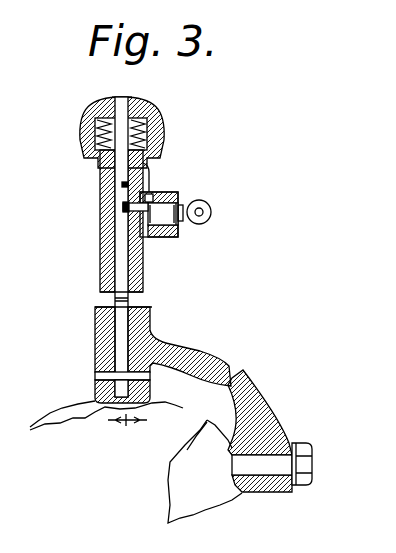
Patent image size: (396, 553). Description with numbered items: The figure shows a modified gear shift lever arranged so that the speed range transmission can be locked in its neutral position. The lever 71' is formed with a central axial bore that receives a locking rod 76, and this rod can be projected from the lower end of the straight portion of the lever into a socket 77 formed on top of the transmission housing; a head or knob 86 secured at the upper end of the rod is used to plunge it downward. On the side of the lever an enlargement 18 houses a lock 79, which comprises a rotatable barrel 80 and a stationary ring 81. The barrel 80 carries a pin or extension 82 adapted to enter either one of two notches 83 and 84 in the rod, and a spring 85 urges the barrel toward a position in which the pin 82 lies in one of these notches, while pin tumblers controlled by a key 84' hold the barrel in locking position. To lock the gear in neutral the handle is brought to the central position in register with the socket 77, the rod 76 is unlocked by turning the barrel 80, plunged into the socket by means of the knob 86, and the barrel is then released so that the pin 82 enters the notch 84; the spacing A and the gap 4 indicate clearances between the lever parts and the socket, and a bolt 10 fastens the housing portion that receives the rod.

The cap knob 85 is at (140, 100).
The cap 86 is at (163, 121).
The detent 84 is at (154, 173).
The boss 18 is at (158, 192).
The tubular casing 71' is at (100, 221).
The pin 83 is at (124, 205).
The pin head 82 is at (127, 210).
The plug flange 81 is at (180, 202).
The ball 79 is at (222, 204).
The ball eye 84' is at (218, 215).
The plug 80 is at (186, 226).
The rod 76 is at (121, 253).
The gap A is at (165, 296).
The nut 77 is at (95, 390).
The dimension 4 is at (127, 429).
The bolt 10 is at (313, 474).